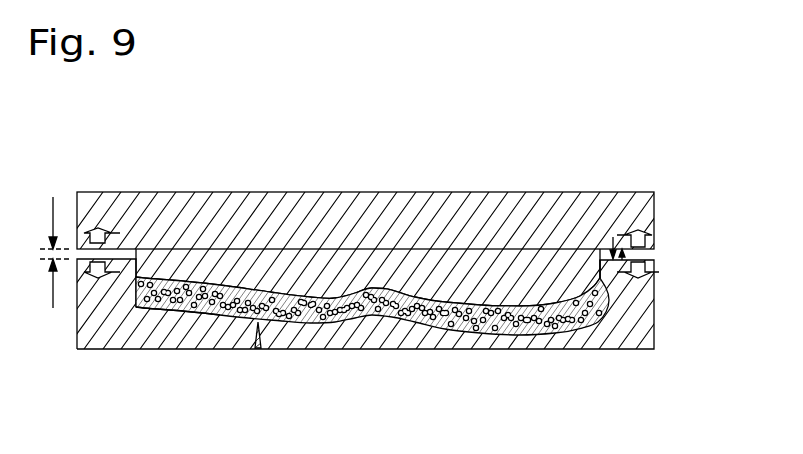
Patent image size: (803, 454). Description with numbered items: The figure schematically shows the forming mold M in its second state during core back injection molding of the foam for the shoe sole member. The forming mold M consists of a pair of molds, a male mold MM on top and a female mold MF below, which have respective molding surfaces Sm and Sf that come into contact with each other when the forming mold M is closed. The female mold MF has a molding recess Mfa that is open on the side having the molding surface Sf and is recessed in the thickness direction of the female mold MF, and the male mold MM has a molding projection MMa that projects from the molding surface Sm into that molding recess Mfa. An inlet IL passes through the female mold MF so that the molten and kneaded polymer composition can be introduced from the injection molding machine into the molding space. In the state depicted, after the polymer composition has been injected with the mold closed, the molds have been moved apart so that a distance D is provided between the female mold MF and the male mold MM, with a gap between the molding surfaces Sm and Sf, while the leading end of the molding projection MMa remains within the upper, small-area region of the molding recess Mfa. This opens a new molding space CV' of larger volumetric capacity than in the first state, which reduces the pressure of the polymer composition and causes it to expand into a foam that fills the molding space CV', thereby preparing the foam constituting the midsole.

The forming mold M is at (381, 138).
The male mold MM is at (652, 235).
The molding projection MMa is at (499, 273).
The female mold MF is at (654, 325).
The molding recess Mfa is at (167, 308).
The molding space in second state CV' is at (376, 336).
The inlet IL is at (257, 348).
The molding surface of female mold Sf is at (613, 237).
The molding surface of male mold Sm is at (606, 282).
The distance D is at (51, 252).